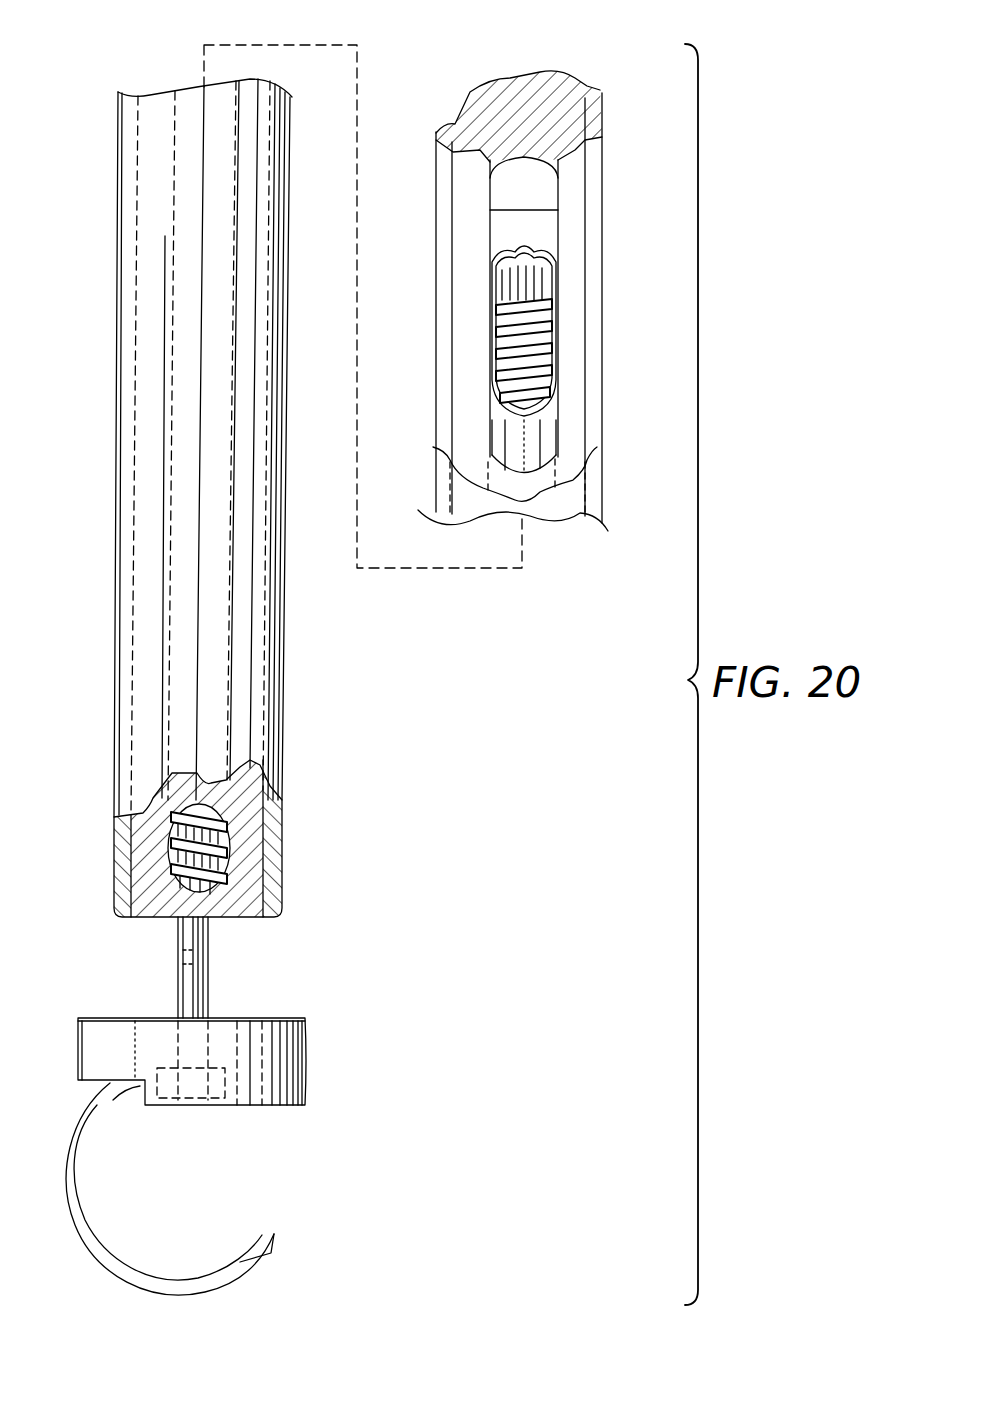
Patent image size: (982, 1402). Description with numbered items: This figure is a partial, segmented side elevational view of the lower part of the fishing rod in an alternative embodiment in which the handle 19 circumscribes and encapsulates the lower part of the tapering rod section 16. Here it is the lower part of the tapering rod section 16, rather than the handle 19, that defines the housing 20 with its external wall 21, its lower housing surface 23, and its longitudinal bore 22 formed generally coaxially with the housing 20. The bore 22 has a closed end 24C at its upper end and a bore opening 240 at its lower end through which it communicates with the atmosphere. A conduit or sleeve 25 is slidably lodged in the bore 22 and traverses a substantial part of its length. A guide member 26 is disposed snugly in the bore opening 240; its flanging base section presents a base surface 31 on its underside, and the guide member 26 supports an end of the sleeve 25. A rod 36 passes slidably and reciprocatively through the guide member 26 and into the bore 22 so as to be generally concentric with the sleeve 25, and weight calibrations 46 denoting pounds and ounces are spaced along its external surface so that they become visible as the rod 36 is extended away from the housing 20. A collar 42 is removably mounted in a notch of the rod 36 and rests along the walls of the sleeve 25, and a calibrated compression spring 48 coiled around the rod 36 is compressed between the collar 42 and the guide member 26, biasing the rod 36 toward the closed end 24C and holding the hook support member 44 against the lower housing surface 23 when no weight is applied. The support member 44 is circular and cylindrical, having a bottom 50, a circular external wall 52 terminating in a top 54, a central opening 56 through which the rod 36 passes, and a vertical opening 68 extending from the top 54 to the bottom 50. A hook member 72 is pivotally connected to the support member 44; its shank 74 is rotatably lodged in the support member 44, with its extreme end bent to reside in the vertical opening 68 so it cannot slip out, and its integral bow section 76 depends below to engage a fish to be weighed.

The tapering rod section 16 is at (262, 124).
The handle 19 is at (291, 438).
The housing 20 is at (243, 835).
The external wall 21 is at (266, 530).
The longitudinal bore 22 is at (222, 697).
The lower housing surface 23 is at (132, 918).
The bore opening 240 is at (245, 919).
The closed end 24C is at (572, 131).
The sleeve 25 is at (505, 228).
The guide member 26 is at (171, 923).
The base surface 31 is at (222, 920).
The rod 36 is at (213, 1010).
The collar 42 is at (497, 302).
The hook support member 44 is at (228, 1118).
The weight calibrations 46 is at (178, 988).
The calibrated compression spring 48 is at (533, 343).
The bottom 50 is at (140, 1018).
The circular external wall 52 is at (306, 1108).
The top 54 is at (275, 1108).
The opening 56 is at (190, 1108).
The vertical opening 68 is at (308, 1015).
The hook member 72 is at (115, 1278).
The shank 74 is at (143, 1106).
The bow section 76 is at (243, 1258).